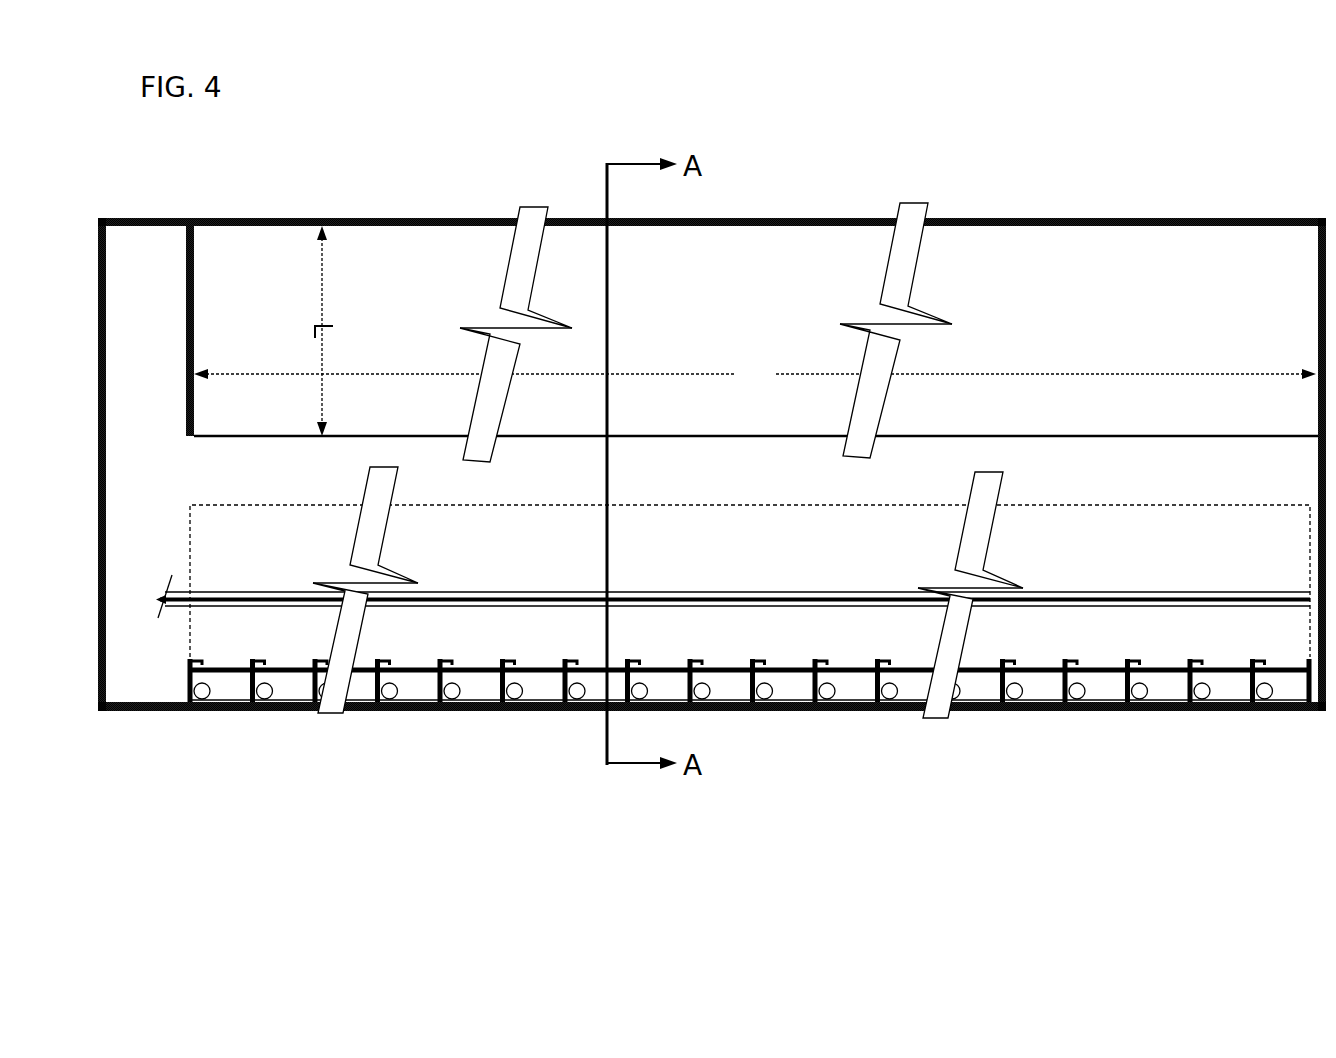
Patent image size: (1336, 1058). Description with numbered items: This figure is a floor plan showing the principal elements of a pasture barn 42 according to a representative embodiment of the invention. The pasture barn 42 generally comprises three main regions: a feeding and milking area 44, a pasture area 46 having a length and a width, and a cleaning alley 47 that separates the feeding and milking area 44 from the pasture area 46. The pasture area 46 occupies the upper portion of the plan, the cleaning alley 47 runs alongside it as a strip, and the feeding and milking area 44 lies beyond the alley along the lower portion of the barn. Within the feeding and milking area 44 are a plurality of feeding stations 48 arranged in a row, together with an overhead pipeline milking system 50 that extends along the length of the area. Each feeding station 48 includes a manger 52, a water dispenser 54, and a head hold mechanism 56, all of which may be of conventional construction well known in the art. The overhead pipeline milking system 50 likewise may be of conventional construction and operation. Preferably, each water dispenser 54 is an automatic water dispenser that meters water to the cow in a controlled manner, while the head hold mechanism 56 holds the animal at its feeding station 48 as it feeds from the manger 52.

The pasture barn 42 is at (412, 160).
The feeding and milking area 44 is at (808, 543).
The pasture area 46 is at (720, 325).
The cleaning alley 47 is at (775, 483).
The feeding station 48 is at (227, 642).
The overhead pipeline milking system 50 is at (717, 580).
The manger 52 is at (230, 690).
The water dispenser 54 is at (200, 700).
The head hold mechanism 56 is at (442, 657).